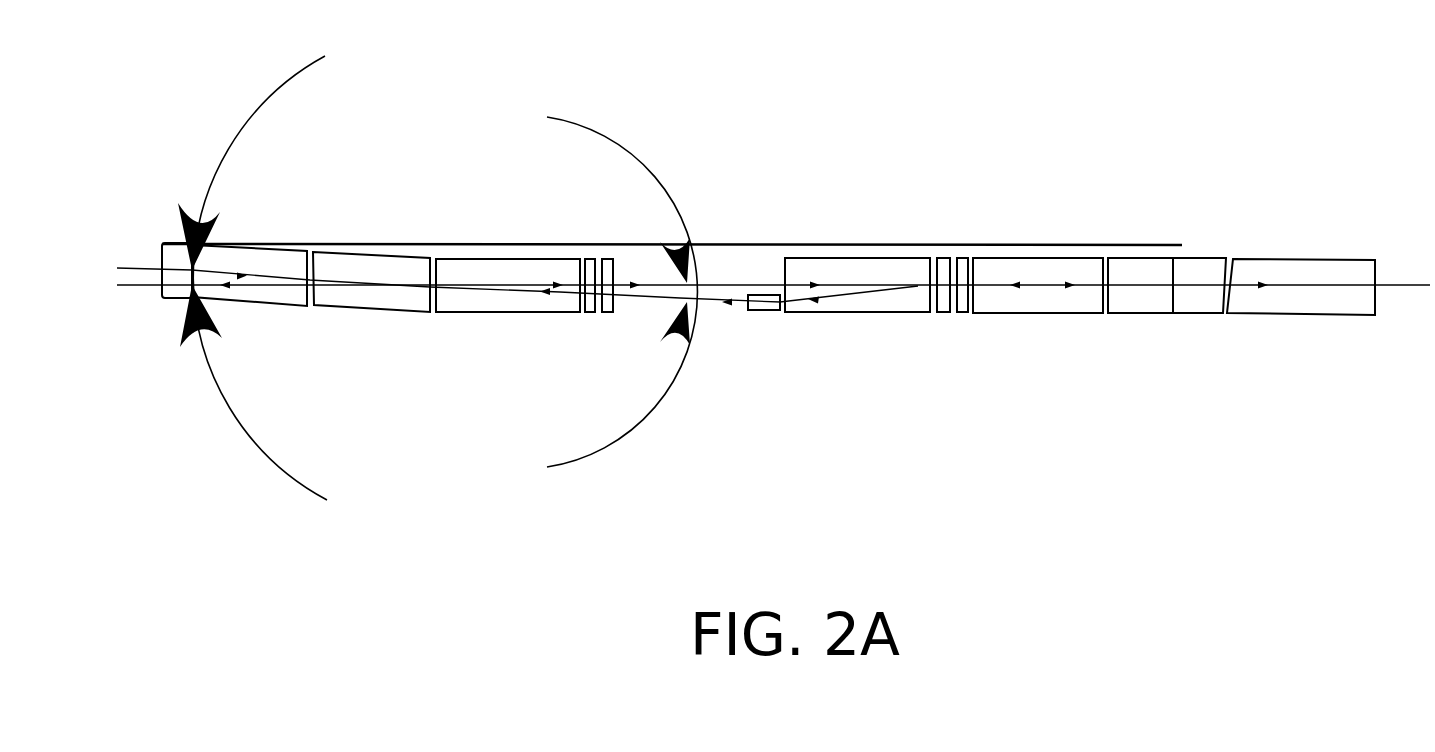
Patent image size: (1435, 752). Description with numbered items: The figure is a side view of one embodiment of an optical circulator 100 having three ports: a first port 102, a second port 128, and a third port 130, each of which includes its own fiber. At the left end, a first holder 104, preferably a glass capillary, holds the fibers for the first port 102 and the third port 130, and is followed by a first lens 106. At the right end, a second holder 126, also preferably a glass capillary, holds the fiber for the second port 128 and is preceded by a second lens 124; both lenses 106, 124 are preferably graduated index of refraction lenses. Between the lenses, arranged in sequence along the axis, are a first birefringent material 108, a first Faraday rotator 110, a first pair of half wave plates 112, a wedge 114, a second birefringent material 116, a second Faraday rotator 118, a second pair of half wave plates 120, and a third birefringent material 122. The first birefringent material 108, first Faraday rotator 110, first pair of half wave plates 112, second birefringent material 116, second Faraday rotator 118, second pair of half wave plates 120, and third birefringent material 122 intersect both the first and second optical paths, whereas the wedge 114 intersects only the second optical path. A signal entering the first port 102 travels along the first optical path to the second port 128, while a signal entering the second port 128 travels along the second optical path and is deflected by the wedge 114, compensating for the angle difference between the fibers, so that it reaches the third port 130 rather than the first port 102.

The optical circulator 100 is at (768, 257).
The first port 102 is at (131, 262).
The first holder 104 is at (277, 246).
The first lens 106 is at (372, 253).
The first birefringent material 108 is at (465, 313).
The first Faraday rotator 110 is at (588, 313).
The first pair of half wave plates 112 is at (604, 313).
The wedge 114 is at (763, 311).
The second birefringent material 116 is at (853, 257).
The second Faraday rotator 118 is at (943, 313).
The second pair of half wave plates 120 is at (958, 313).
The third birefringent material 122 is at (1085, 314).
The second lens 124 is at (1192, 314).
The second holder 126 is at (1305, 258).
The second port 128 is at (1410, 284).
The third port 130 is at (131, 287).